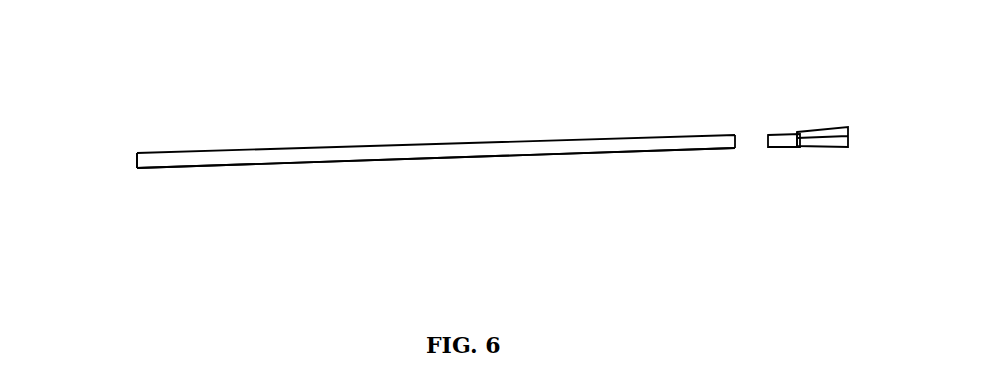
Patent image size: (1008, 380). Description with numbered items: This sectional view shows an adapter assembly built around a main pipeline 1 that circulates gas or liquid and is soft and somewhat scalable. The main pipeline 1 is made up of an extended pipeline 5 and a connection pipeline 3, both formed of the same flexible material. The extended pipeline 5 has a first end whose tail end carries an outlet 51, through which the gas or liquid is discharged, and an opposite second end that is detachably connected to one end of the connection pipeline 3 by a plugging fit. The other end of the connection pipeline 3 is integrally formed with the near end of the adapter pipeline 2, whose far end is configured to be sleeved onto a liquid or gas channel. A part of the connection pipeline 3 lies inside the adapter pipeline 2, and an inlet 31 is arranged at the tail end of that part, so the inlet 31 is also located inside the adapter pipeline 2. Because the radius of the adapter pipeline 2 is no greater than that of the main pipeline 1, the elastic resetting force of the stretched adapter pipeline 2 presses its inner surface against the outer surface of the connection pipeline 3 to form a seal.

The main pipeline 1 is at (247, 114).
The extended pipeline 5 is at (313, 165).
The outlet 51 is at (134, 157).
The connection pipeline 3 is at (784, 148).
The inlet 31 is at (805, 148).
The adapter pipeline 2 is at (825, 128).